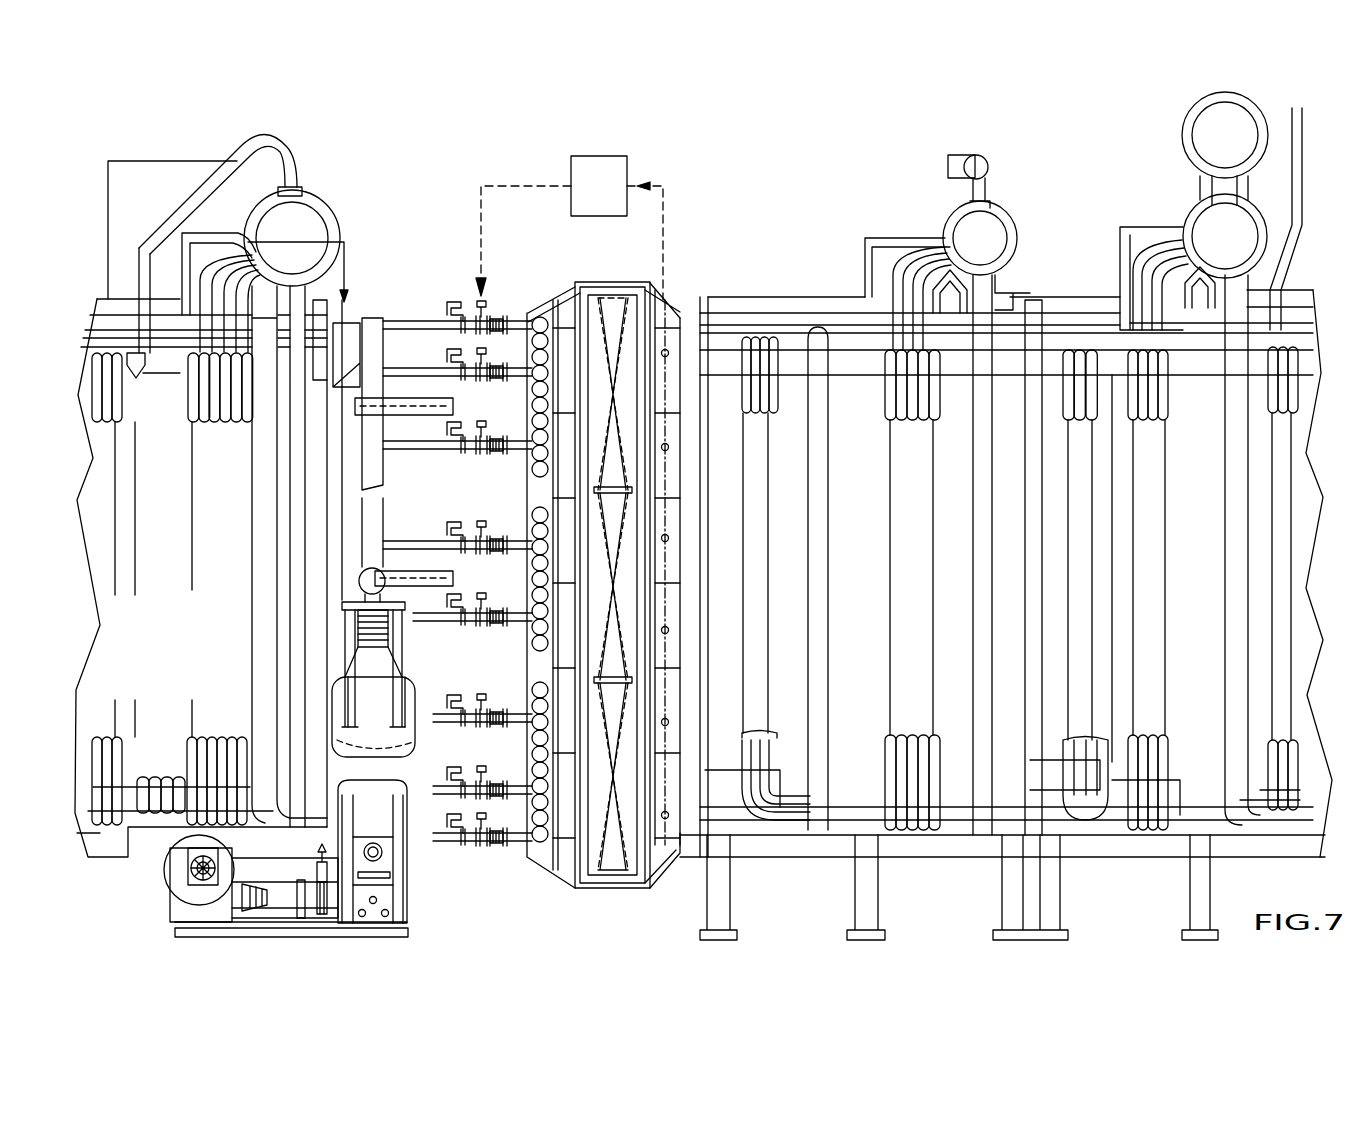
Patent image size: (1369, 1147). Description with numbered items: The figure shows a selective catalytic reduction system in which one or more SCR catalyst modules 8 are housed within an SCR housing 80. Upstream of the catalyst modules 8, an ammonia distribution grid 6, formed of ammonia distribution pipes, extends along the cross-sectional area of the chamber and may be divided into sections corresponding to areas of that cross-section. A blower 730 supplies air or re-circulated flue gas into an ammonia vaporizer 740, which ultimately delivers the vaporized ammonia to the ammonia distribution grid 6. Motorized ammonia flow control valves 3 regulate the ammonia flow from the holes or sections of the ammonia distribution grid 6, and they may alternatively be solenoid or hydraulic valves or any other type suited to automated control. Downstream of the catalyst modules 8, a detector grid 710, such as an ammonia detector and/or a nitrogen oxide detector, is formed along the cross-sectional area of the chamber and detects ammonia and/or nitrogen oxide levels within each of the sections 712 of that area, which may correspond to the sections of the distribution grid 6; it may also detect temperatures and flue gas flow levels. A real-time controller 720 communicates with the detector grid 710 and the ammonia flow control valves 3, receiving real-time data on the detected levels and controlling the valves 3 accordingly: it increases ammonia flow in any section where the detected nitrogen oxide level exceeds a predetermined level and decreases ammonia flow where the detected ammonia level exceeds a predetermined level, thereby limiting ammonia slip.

The controller 720 is at (598, 155).
The detector grid 710 is at (672, 280).
The sections 712 is at (678, 322).
The SCR catalyst module 8 is at (625, 513).
The SCR housing 80 is at (655, 888).
The ammonia distribution grid 6 is at (441, 325).
The ammonia flow control valves 3 is at (483, 758).
The ammonia vaporizer 740 is at (380, 812).
The blower 730 is at (200, 888).